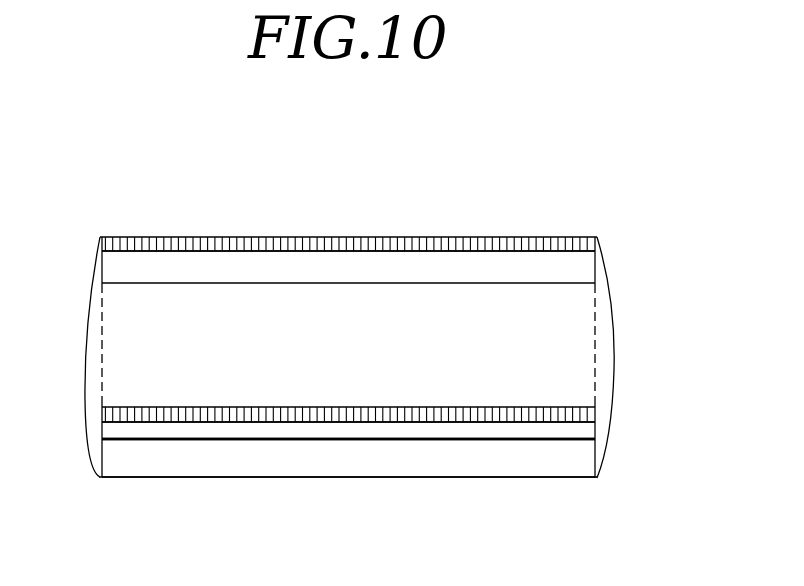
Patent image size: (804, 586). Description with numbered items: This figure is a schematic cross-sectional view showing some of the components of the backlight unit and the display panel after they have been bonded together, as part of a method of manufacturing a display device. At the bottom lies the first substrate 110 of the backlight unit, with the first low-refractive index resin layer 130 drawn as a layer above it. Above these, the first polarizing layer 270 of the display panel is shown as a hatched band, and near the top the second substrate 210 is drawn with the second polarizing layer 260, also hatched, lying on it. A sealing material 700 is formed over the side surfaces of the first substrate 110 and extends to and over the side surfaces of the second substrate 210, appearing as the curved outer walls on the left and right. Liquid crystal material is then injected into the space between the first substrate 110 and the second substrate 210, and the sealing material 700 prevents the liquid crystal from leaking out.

The sealing material 700 is at (607, 317).
The second polarizing layer 260 is at (100, 240).
The second substrate 210 is at (110, 268).
The first polarizing layer 270 is at (102, 411).
The first low-refractive index resin layer 130 is at (108, 433).
The first substrate 110 is at (110, 457).